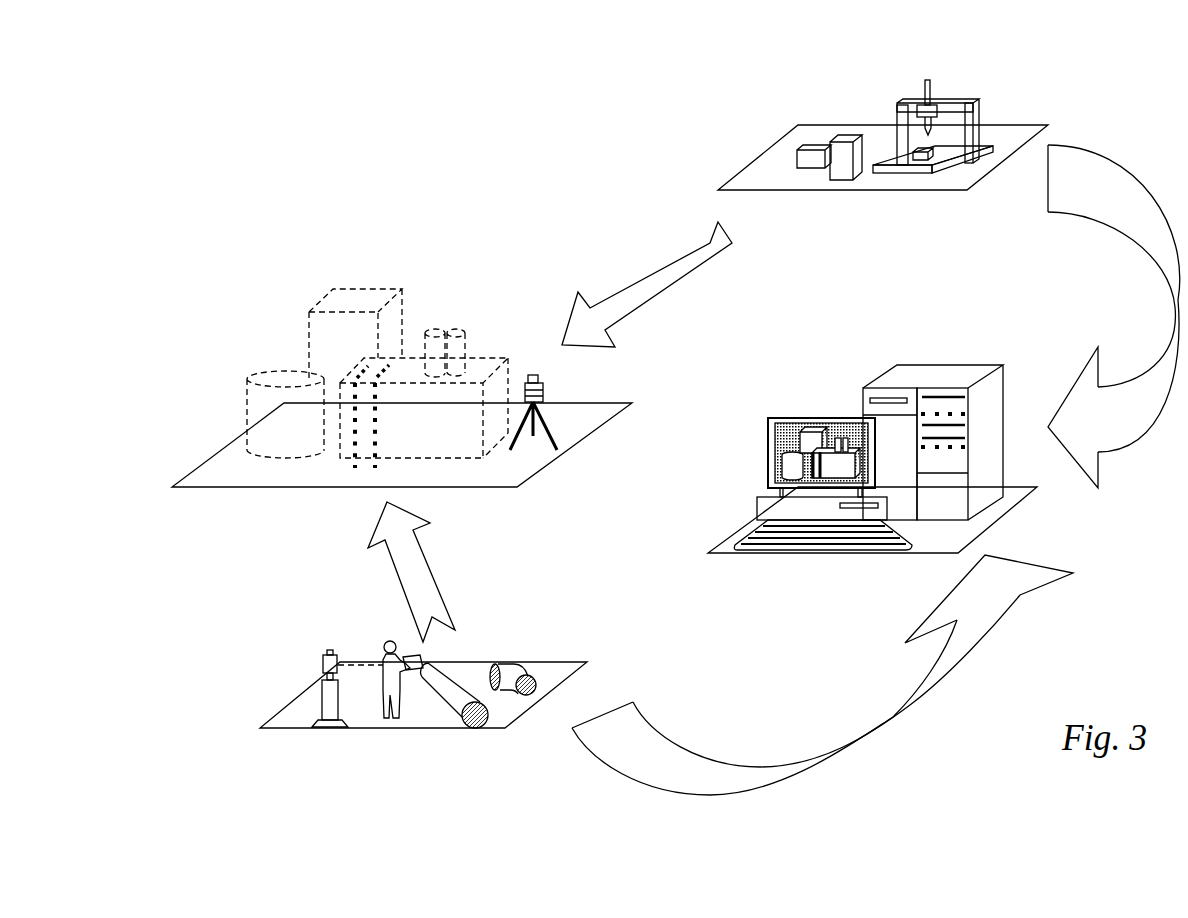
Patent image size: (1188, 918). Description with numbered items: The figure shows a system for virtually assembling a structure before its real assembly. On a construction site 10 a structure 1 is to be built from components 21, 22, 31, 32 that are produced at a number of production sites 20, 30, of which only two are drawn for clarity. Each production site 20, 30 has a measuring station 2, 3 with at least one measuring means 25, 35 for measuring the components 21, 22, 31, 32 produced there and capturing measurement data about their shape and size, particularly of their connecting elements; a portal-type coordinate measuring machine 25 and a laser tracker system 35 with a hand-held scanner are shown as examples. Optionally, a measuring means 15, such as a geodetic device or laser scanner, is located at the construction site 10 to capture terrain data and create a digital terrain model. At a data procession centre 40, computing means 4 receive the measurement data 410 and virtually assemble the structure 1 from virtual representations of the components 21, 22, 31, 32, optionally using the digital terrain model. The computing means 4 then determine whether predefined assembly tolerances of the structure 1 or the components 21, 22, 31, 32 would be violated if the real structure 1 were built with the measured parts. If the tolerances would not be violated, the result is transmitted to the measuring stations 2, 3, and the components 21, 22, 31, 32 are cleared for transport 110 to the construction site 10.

The structure 1 is at (298, 278).
The construction site 10 is at (358, 477).
The measuring means 15 is at (555, 415).
The transport 110 is at (663, 272).
The measuring station 2 is at (1010, 92).
The production site 20 is at (962, 178).
The component 21 is at (805, 163).
The component 22 is at (842, 148).
The portal-type coordinate measuring machine 25 is at (907, 88).
The computing means 4 is at (827, 402).
The data procession centre 40 is at (930, 540).
The measurement data 410 is at (1115, 217).
The measuring station 3 is at (253, 743).
The production site 30 is at (363, 715).
The component 31 is at (457, 695).
The component 32 is at (507, 683).
The laser tracker system 35 is at (340, 645).